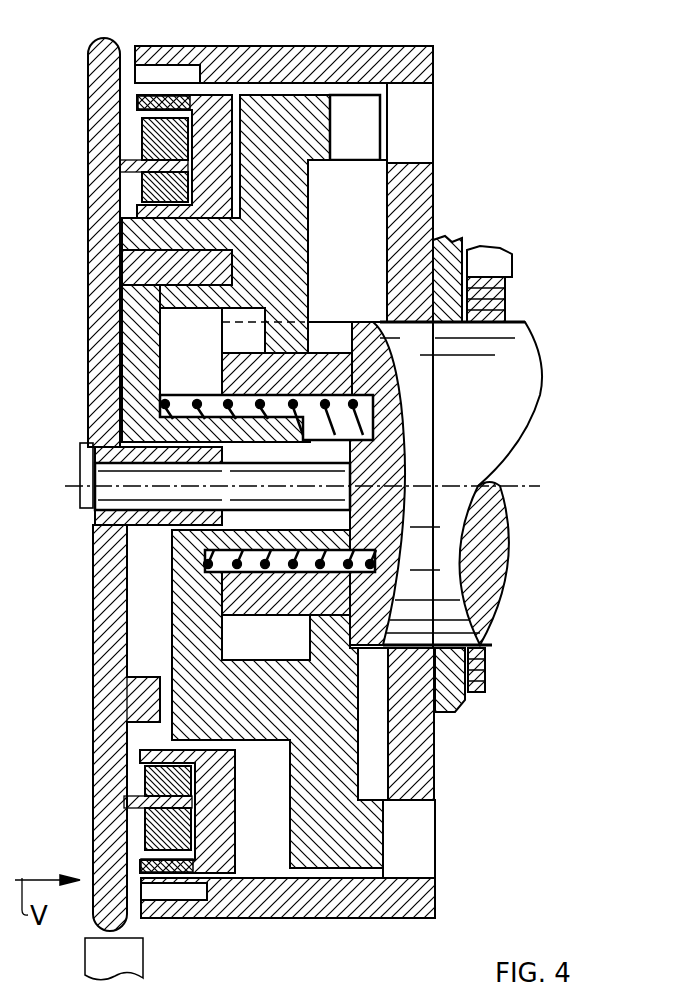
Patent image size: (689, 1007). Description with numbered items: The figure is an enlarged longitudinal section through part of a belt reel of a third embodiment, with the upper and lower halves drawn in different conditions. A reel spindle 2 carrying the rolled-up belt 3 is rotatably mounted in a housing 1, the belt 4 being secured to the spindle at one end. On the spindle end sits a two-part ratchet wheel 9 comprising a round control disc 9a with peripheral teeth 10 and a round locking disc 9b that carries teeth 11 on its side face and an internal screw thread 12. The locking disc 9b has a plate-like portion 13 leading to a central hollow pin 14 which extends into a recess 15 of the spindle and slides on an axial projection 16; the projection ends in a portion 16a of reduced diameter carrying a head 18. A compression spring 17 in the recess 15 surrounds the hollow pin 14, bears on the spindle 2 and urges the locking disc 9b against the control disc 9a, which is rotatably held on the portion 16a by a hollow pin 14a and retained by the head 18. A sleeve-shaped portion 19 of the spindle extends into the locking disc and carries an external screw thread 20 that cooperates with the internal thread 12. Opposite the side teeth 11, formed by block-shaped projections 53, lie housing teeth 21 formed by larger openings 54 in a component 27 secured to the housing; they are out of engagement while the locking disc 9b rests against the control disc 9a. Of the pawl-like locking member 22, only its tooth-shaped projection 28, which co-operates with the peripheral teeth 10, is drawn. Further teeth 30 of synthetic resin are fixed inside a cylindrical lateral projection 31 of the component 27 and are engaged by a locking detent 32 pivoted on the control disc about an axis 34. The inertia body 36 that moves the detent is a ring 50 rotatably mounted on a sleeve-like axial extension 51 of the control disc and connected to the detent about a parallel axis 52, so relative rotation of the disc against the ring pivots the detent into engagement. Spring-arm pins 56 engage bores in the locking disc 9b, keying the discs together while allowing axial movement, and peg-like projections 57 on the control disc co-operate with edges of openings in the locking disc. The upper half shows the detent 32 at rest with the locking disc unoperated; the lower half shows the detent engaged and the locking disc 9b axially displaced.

The housing 1 is at (446, 242).
The reel spindle 2 is at (508, 438).
The rolled-up belt 3 is at (500, 297).
The belt 4 is at (490, 258).
The ratchet wheel 9 is at (146, 566).
The control disc 9a is at (102, 640).
The locking disc 9b is at (292, 105).
The peripheral teeth 10 is at (96, 50).
The side teeth 11 is at (349, 176).
The internal screw thread 12 is at (247, 338).
The plate-like portion 13 is at (137, 350).
The hollow pin 14 is at (257, 432).
The hollow pin 14a is at (98, 548).
The recess 15 is at (402, 528).
The axial projection 16 is at (333, 473).
The portion of reduced diameter 16a is at (210, 498).
The compression spring 17 is at (357, 420).
The head 18 is at (80, 458).
The sleeve-shaped portion 19 is at (250, 372).
The external screw thread 20 is at (336, 342).
The housing teeth 21 is at (450, 94).
The locking member 22 is at (150, 960).
The component 27 is at (420, 192).
The tooth-shaped projection 28 is at (143, 960).
The further teeth 30 is at (160, 72).
The cylindrical lateral projection 31 is at (253, 58).
The locking detent 32 is at (165, 135).
The axis 34 is at (150, 188).
The inertia body 36 is at (213, 78).
The ring 50 is at (225, 820).
The sleeve-like axial extension 51 is at (230, 752).
The axis 52 is at (160, 118).
The block-shaped projections 53 is at (362, 137).
The openings 54 is at (420, 112).
The pin 56 is at (180, 280).
The peg-like projections 57 is at (145, 732).